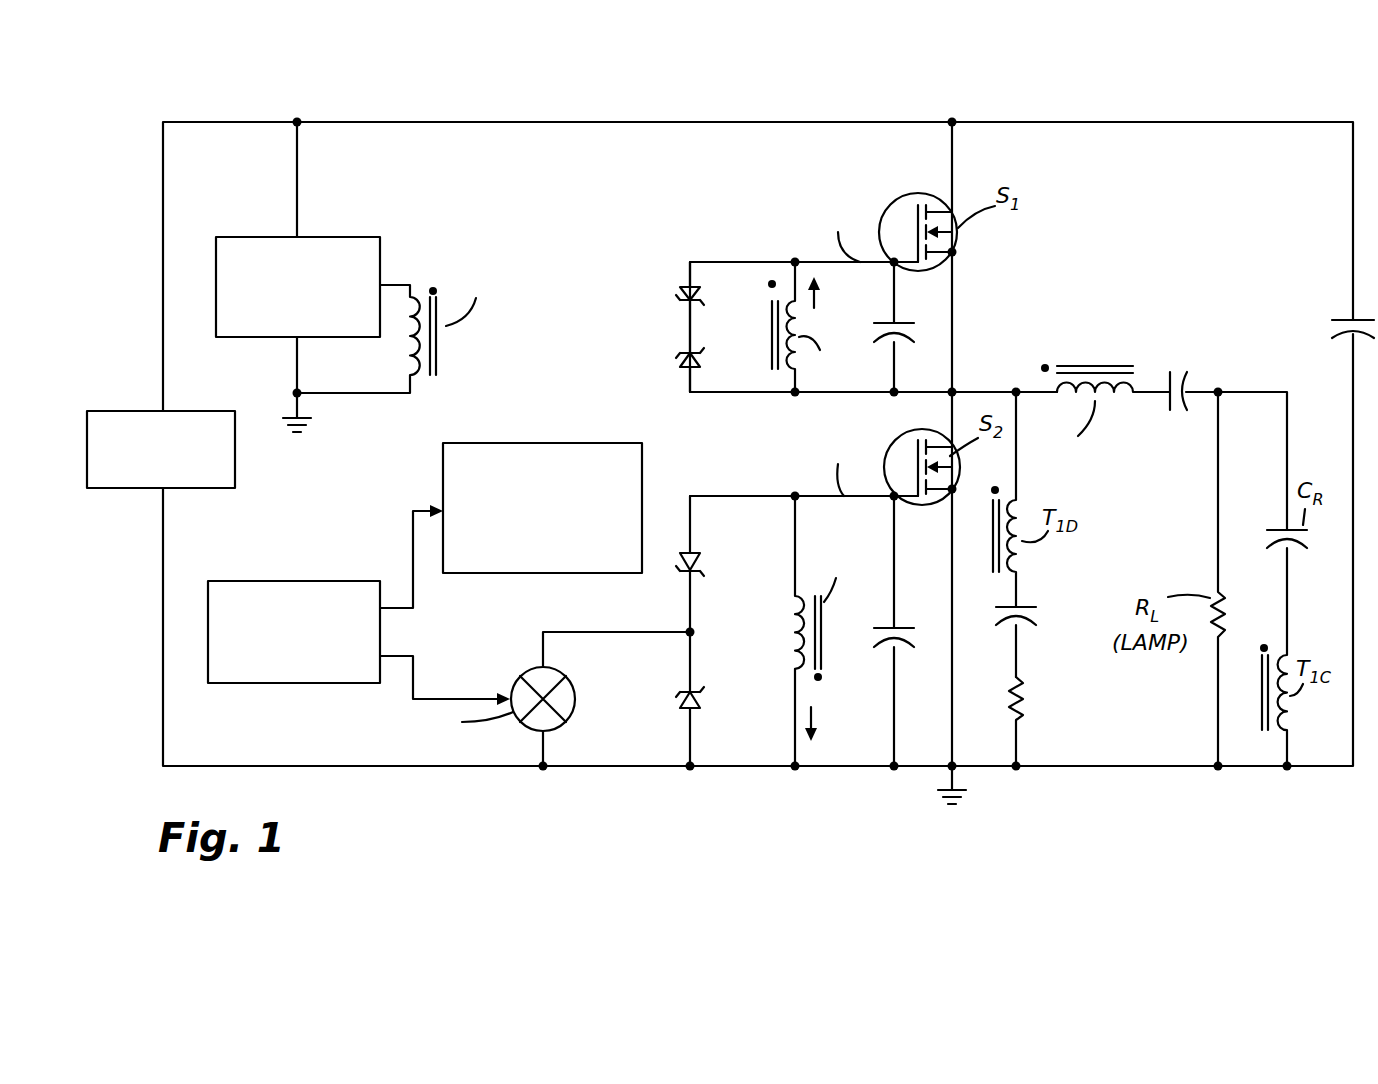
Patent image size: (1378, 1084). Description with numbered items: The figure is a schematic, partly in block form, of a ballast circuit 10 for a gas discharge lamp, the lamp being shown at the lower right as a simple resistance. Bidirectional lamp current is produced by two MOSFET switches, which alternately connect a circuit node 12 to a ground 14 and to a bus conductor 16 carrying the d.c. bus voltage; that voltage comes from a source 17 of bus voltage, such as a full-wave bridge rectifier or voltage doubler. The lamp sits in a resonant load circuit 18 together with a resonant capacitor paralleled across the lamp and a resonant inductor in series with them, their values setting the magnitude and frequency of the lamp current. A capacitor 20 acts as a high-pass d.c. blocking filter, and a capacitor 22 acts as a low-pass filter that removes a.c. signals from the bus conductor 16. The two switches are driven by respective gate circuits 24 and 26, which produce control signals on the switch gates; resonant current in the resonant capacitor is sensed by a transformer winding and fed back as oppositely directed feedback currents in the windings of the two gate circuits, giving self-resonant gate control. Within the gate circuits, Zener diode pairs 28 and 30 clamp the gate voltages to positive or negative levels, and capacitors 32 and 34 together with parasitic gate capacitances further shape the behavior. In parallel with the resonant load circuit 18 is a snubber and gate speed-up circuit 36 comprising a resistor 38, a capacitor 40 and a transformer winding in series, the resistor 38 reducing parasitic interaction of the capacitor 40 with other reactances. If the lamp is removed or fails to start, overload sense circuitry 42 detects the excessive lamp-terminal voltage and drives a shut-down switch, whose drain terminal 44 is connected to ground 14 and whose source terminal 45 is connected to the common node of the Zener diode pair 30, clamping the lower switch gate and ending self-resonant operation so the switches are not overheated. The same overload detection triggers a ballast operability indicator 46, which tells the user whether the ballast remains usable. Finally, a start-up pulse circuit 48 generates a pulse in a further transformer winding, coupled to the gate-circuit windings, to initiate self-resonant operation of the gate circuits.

The ballast circuit 10 is at (206, 77).
The circuit node 12 is at (954, 392).
The ground 14 is at (963, 775).
The bus conductor 16 is at (757, 120).
The source of bus voltage 17 is at (200, 411).
The resonant load circuit 18 is at (1157, 368).
The capacitor 20 is at (1188, 367).
The capacitor 22 is at (1330, 320).
The gate circuit 24 is at (780, 288).
The gate circuit 26 is at (797, 602).
The Zener diode pair 28 is at (679, 363).
The Zener diode pair 30 is at (694, 690).
The capacitor 32 is at (912, 334).
The capacitor 34 is at (876, 631).
The snubber and gate speed-up circuit 36 is at (1017, 370).
The resistor 38 is at (1025, 716).
The capacitor 40 is at (1000, 617).
The overload sense circuitry 42 is at (288, 581).
The drain terminal 44 is at (545, 753).
The source terminal 45 is at (587, 632).
The ballast operability indicator 46 is at (500, 443).
The start-up pulse circuit 48 is at (360, 237).